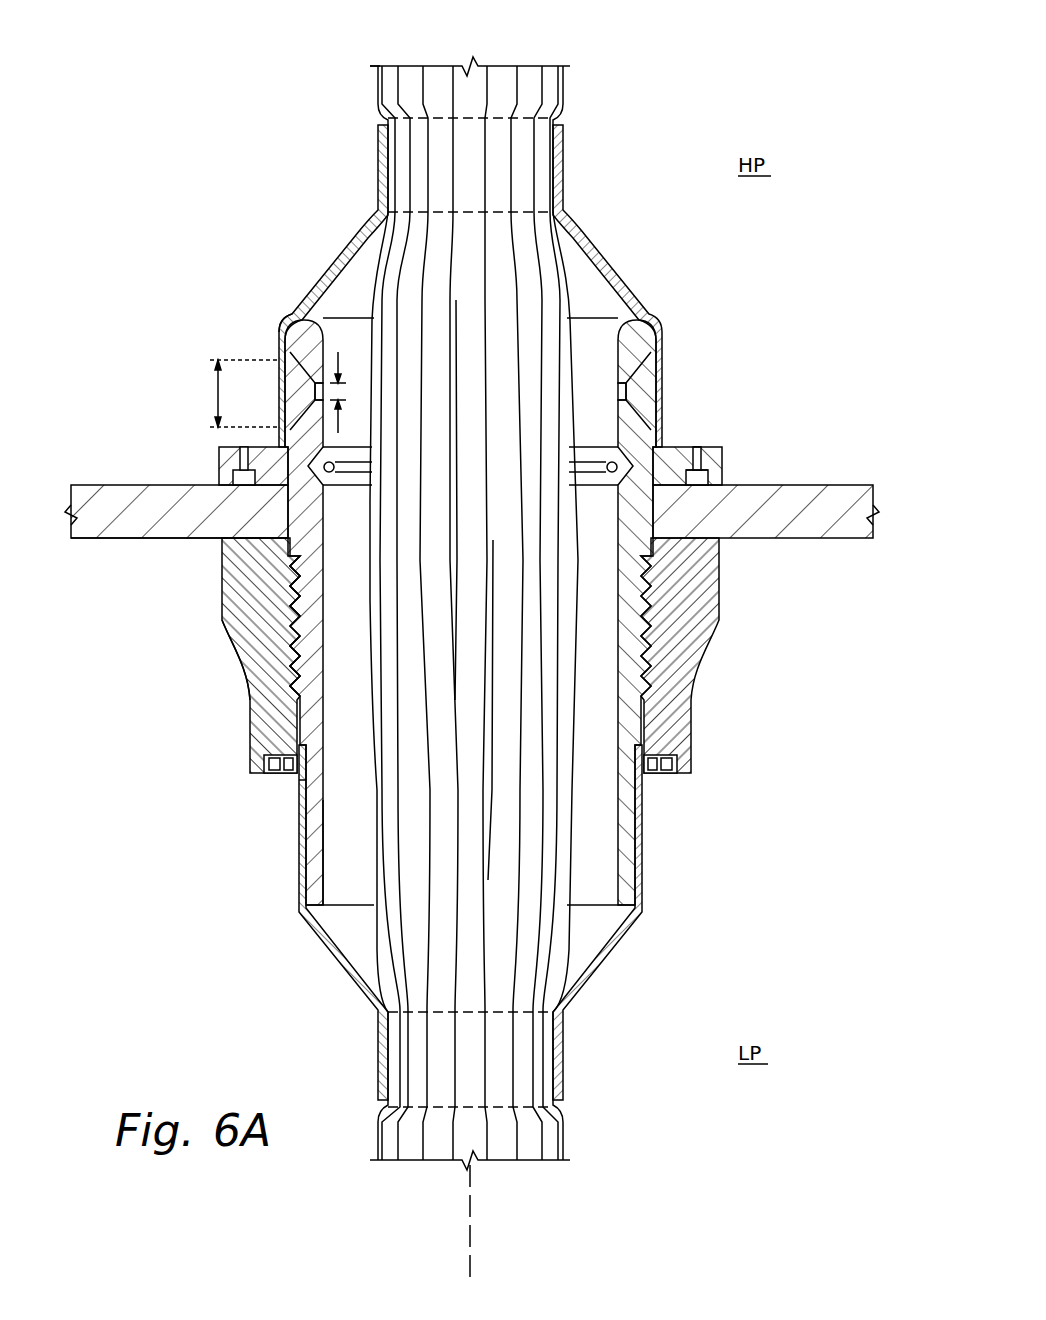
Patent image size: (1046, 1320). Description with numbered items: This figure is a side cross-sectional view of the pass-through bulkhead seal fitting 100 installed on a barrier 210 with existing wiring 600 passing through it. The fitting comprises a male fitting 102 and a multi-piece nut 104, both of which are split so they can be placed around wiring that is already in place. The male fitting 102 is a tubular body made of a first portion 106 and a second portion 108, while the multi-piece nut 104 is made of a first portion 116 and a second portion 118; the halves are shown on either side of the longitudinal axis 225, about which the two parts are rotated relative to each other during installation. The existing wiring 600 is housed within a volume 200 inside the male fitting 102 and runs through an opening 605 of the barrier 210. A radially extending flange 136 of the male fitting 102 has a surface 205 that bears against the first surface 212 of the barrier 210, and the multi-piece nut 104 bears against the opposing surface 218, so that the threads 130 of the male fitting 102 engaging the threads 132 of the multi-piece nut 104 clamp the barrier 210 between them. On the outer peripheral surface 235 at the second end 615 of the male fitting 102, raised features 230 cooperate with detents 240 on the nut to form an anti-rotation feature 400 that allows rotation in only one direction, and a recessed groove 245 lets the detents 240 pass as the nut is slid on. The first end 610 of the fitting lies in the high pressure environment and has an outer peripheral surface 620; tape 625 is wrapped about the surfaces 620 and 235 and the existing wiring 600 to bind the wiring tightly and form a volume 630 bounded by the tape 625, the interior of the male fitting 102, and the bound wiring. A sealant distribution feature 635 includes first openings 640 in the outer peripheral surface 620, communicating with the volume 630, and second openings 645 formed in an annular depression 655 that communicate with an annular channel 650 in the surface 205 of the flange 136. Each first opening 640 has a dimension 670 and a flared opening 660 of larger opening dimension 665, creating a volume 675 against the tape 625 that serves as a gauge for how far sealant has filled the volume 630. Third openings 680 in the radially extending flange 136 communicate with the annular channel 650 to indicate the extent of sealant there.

The pass-through bulkhead seal fitting 100 is at (192, 118).
The male fitting 102 is at (270, 311).
The multi-piece nut 104 is at (220, 701).
The first portion 106 is at (232, 447).
The second portion 108 is at (723, 448).
The first portion 116 is at (222, 566).
The second portion 118 is at (722, 598).
The threads 130 is at (296, 610).
The threads 132 is at (300, 676).
The radially extending flange 136 is at (725, 474).
The volume 200 is at (594, 858).
The surface 205 is at (716, 486).
The barrier 210 is at (833, 497).
The first surface 212 is at (103, 483).
The opposing surface 218 is at (101, 540).
The longitudinal axis 225 is at (473, 1250).
The raised features 230 is at (645, 778).
The outer peripheral surface 235 is at (637, 815).
The detents 240 is at (283, 778).
The recessed groove 245 is at (323, 872).
The anti-rotation feature 400 is at (286, 800).
The existing wiring 600 is at (578, 50).
The opening 605 is at (292, 513).
The first end 610 is at (655, 323).
The second end 615 is at (312, 916).
The outer peripheral surface 620 is at (661, 356).
The tape 625 is at (590, 250).
The volume 630 is at (598, 300).
The sealant distribution feature 635 is at (600, 440).
The first openings 640 is at (316, 393).
The second openings 645 is at (330, 474).
The annular channel 650 is at (238, 476).
The annular depression 655 is at (612, 476).
The flared opening 660 is at (300, 385).
The opening dimension 665 is at (214, 390).
The dimension 670 is at (347, 400).
The volume 675 is at (645, 386).
The third openings 680 is at (697, 446).